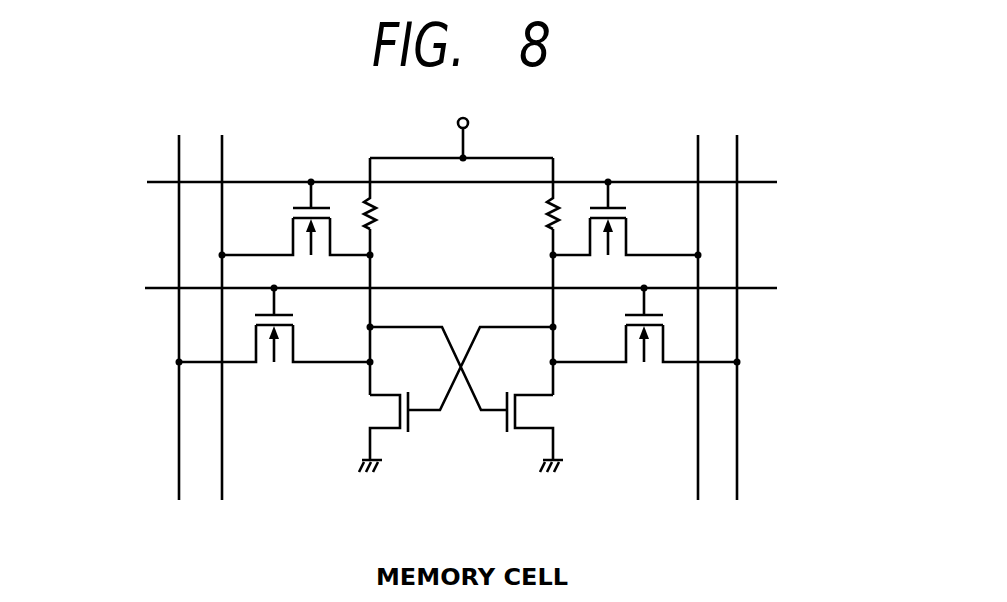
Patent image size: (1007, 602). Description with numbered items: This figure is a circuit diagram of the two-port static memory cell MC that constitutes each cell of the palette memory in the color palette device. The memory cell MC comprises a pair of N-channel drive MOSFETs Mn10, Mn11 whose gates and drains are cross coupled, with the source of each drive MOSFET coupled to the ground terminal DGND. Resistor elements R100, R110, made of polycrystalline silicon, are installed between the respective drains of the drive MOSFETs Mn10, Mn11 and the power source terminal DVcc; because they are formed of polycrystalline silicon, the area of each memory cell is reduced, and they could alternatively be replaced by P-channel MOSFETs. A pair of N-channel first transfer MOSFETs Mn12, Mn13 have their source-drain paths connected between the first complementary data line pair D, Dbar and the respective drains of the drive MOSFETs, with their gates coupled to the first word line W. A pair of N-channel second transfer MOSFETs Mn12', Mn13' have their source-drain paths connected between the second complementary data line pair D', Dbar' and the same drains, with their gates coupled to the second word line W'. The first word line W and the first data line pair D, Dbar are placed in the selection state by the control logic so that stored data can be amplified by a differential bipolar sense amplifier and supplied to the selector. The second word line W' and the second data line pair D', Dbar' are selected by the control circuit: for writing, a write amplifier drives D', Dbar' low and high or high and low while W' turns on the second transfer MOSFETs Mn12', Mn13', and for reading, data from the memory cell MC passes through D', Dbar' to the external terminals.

The N-channel type drive MOSFET Mn10 is at (392, 412).
The N-channel type drive MOSFET Mn11 is at (524, 412).
The N-channel type first transfer MOSFET Mn12 is at (273, 343).
The N-channel type first transfer MOSFET Mn13 is at (647, 344).
The N-channel type second transfer MOSFET Mn12' is at (295, 219).
The N-channel type second transfer MOSFET Mn13' is at (627, 219).
The resistor element R100 is at (397, 194).
The resistor element R110 is at (523, 194).
The first word line W is at (438, 269).
The second word line W' is at (438, 167).
The first complementary data line D is at (166, 317).
The second complementary data line D' is at (235, 317).
The first complementary data line Dbar is at (749, 317).
The second complementary data line Dbar' is at (680, 317).
The power source terminal DVcc is at (461, 125).
The ground terminal DGND is at (457, 489).
The static memory cell MC is at (468, 546).